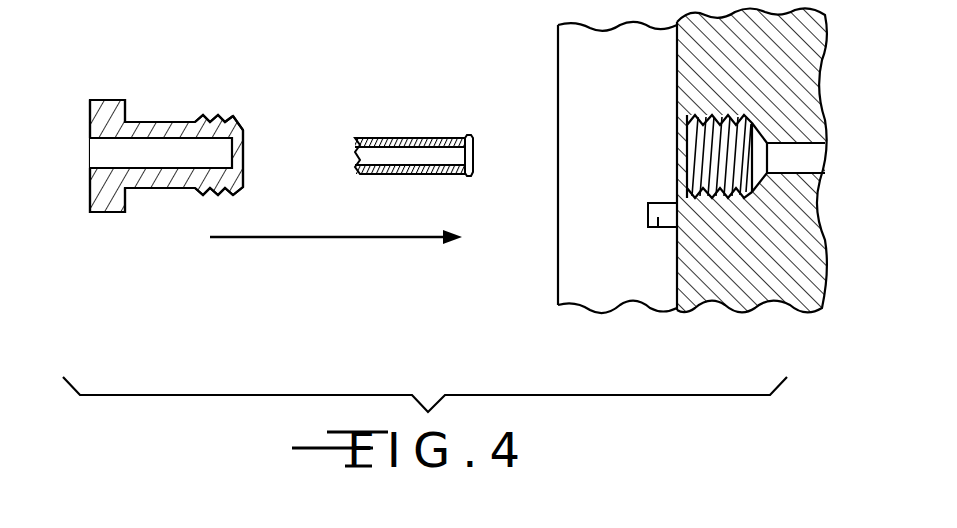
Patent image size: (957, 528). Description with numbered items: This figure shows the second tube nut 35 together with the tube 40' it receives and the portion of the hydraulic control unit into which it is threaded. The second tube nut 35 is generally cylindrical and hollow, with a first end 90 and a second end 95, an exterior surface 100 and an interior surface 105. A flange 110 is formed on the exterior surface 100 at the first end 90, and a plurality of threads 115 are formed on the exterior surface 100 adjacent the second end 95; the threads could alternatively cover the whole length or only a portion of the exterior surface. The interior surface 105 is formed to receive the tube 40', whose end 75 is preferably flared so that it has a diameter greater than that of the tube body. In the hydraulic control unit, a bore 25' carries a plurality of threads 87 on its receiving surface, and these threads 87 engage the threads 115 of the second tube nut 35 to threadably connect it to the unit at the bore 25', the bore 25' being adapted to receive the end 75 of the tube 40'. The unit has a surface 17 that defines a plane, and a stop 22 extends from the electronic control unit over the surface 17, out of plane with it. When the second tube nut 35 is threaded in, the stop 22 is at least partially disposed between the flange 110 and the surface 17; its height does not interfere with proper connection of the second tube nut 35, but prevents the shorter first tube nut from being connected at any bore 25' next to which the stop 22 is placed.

The second tube nut 35 is at (181, 171).
The first end 90 is at (90, 125).
The second end 95 is at (245, 132).
The exterior surface 100 is at (178, 190).
The interior surface 105 is at (236, 165).
The flange 110 is at (107, 213).
The threads 115 is at (222, 197).
The tube 40' is at (421, 113).
The end 75 is at (468, 136).
The surface 17 is at (677, 265).
The stop 22 is at (657, 222).
The bore 25' is at (713, 127).
The threads 87 is at (714, 184).